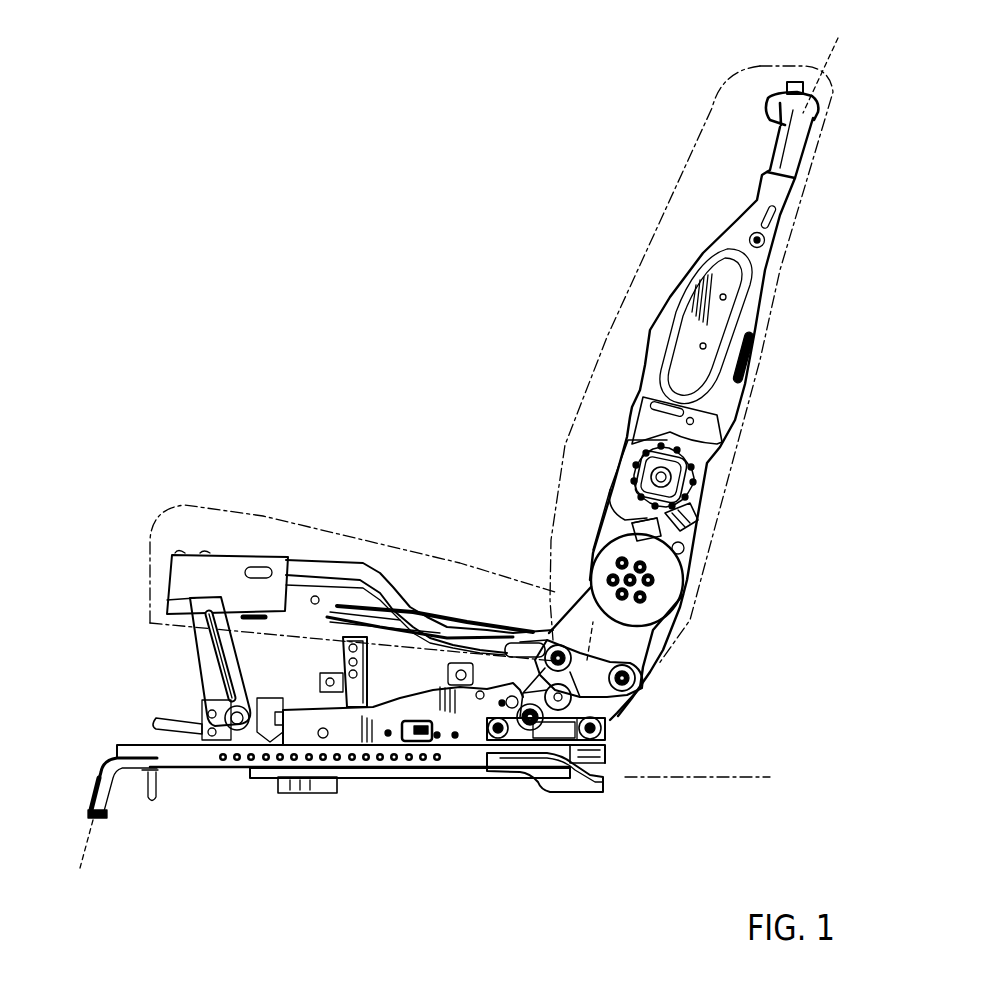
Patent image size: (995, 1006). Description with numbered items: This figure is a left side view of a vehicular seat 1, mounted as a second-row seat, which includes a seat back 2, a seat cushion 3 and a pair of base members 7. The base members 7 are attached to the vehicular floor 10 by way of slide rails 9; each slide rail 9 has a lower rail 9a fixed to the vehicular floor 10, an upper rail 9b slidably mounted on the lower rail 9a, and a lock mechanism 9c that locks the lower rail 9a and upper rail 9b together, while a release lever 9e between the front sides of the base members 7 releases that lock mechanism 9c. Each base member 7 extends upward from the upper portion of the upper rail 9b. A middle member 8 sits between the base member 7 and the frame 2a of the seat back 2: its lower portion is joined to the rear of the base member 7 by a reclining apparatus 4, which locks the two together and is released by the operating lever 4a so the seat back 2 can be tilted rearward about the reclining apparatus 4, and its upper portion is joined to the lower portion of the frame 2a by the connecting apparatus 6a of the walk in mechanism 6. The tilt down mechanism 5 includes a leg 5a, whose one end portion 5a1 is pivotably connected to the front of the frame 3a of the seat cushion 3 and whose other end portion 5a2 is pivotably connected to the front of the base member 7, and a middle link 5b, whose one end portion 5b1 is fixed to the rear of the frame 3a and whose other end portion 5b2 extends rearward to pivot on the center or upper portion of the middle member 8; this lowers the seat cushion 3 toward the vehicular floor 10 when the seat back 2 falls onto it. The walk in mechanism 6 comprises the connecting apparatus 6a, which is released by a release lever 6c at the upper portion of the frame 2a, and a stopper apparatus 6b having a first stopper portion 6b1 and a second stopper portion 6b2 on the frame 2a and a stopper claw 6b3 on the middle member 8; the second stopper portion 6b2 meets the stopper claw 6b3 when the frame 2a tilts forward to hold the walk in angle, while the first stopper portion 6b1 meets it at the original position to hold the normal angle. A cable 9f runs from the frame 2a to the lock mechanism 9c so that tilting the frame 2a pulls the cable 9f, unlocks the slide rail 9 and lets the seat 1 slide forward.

The seat 1 is at (425, 296).
The seat back 2 is at (621, 291).
The frame of the seat back 2a is at (737, 317).
The seat cushion 3 is at (358, 520).
The frame of the seat cushion 3a is at (380, 580).
The reclining apparatus 4 is at (667, 587).
The operating lever 4a is at (807, 97).
The tilt down mechanism 5 is at (187, 643).
The leg 5a is at (213, 655).
The one end portion of the leg 5a1 is at (200, 595).
The other end portion of the leg 5a2 is at (228, 723).
The middle link 5b is at (593, 622).
The one end portion of the middle link 5b1 is at (557, 643).
The other end portion of the middle link 5b2 is at (657, 522).
The walk in mechanism 6 is at (618, 455).
The connecting apparatus 6a is at (673, 473).
The stopper apparatus 6b is at (717, 517).
The first stopper portion 6b1 is at (688, 503).
The second stopper portion 6b2 is at (630, 500).
The stopper claw 6b3 is at (690, 527).
The release lever 6c is at (826, 62).
The base member 7 is at (597, 700).
The middle member 8 is at (685, 545).
The slide rail 9 is at (113, 740).
The lower rail 9a is at (182, 757).
The upper rail 9b is at (357, 767).
The lock mechanism 9c is at (287, 783).
The release lever 9e is at (150, 718).
The cable 9f is at (447, 748).
The vehicular floor 10 is at (733, 783).